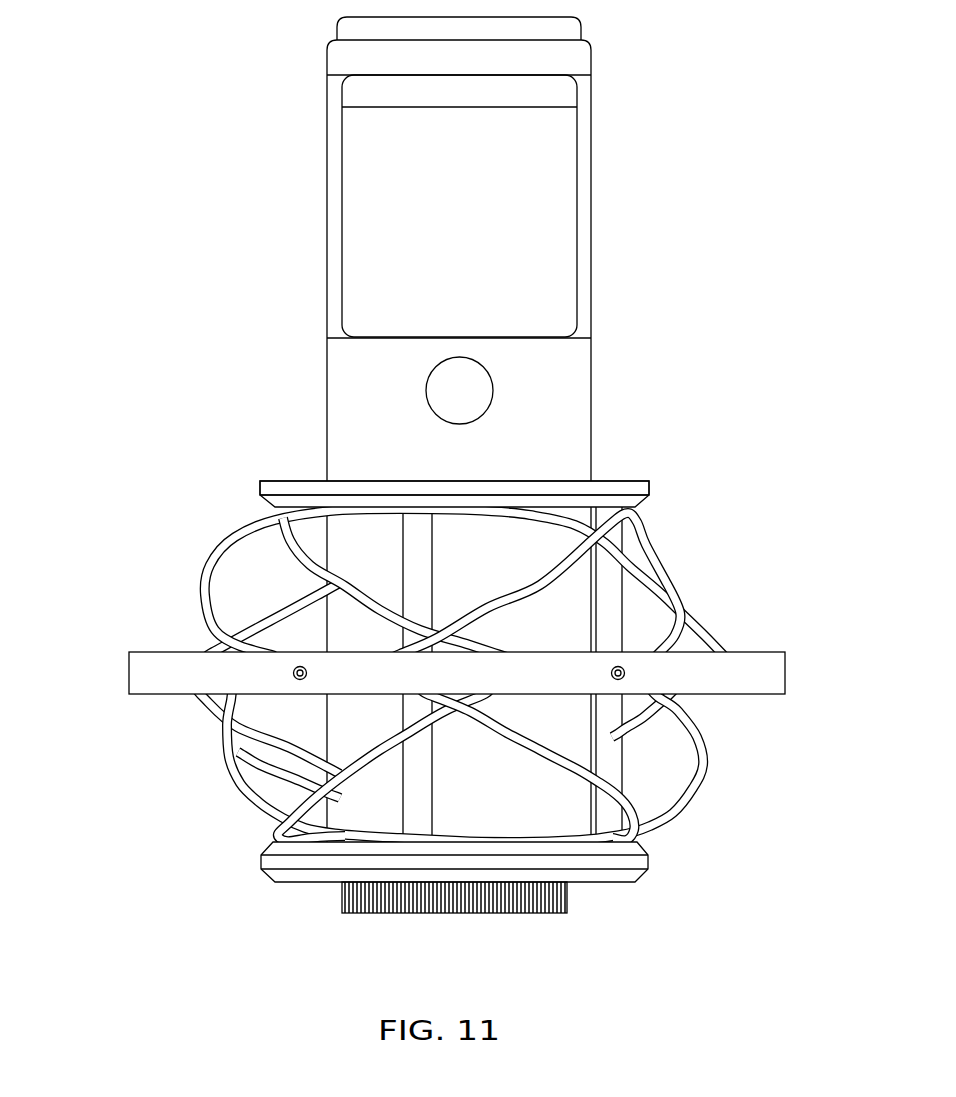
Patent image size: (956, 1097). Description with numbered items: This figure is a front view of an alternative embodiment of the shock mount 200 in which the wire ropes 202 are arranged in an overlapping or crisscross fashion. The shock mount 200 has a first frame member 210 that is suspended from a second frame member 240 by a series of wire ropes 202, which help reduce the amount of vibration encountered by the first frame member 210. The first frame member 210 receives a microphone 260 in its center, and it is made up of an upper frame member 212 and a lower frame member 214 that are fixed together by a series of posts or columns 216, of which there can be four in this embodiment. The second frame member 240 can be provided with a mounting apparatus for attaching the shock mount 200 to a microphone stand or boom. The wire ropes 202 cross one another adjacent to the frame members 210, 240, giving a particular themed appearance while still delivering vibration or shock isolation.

The shock mount 200 is at (133, 662).
The wire ropes 202 is at (220, 558).
The first frame member 210 is at (490, 460).
The upper frame member 212 is at (283, 483).
The lower frame member 214 is at (645, 864).
The posts or columns 216 is at (617, 567).
The second frame member 240 is at (782, 676).
The microphone 260 is at (557, 187).